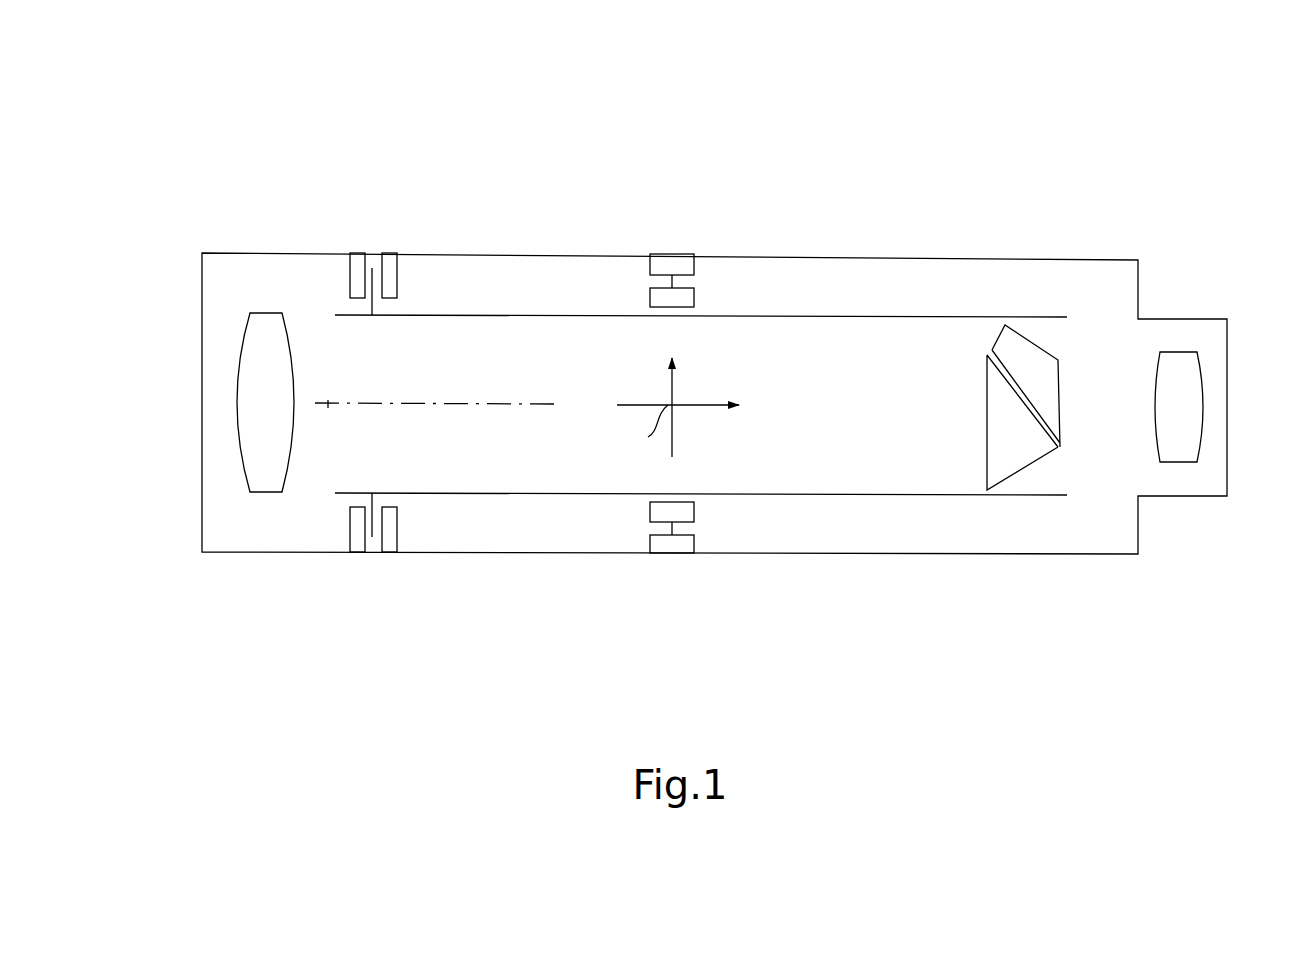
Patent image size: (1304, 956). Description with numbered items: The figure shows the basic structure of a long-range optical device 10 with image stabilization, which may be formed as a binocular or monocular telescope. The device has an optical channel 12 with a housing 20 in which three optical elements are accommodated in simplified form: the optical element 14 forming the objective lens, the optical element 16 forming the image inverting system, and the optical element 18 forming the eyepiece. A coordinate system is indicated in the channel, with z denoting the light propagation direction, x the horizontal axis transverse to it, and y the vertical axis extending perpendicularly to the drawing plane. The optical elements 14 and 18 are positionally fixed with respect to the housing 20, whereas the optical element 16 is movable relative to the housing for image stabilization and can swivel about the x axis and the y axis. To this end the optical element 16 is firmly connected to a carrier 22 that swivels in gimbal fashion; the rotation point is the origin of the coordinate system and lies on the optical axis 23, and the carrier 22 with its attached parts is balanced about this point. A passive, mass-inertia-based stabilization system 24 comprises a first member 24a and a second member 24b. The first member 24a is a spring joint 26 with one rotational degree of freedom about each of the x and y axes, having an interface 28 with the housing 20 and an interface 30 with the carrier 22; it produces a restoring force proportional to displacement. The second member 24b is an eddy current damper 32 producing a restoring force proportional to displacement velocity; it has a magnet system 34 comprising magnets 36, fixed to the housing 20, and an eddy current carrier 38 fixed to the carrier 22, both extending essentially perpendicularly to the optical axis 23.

The long-range optical device 10 is at (882, 170).
The optical channel 12 is at (522, 447).
The optical element forming the objective lens 14 is at (260, 466).
The optical element forming the image inverting system 16 is at (1015, 450).
The optical element forming the eyepiece 18 is at (1187, 437).
The housing 20 is at (435, 555).
The carrier 22 is at (852, 497).
The optical axis 23 is at (328, 404).
The stabilization system 24 is at (525, 233).
The first member 24a is at (672, 240).
The second member 24b is at (377, 235).
The spring joint 26 is at (690, 285).
The interface with the housing 28 is at (650, 262).
The interface with the carrier 30 is at (680, 300).
The eddy current damper 32 is at (344, 284).
The magnet system 34 is at (404, 284).
The magnets 36 is at (387, 540).
The eddy current carrier 38 is at (372, 310).